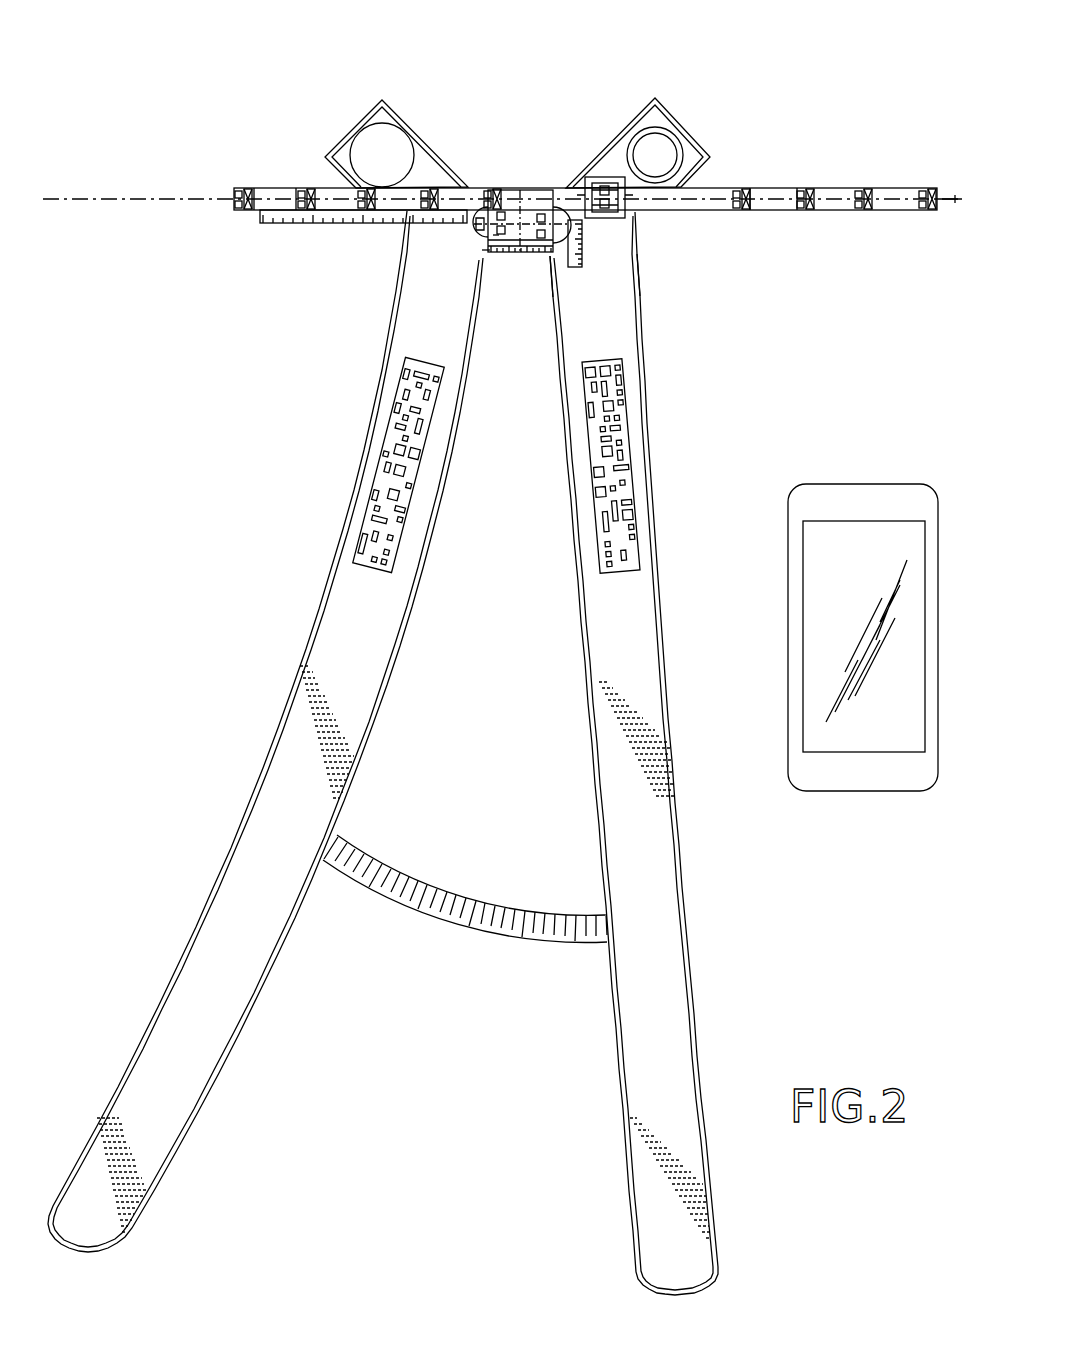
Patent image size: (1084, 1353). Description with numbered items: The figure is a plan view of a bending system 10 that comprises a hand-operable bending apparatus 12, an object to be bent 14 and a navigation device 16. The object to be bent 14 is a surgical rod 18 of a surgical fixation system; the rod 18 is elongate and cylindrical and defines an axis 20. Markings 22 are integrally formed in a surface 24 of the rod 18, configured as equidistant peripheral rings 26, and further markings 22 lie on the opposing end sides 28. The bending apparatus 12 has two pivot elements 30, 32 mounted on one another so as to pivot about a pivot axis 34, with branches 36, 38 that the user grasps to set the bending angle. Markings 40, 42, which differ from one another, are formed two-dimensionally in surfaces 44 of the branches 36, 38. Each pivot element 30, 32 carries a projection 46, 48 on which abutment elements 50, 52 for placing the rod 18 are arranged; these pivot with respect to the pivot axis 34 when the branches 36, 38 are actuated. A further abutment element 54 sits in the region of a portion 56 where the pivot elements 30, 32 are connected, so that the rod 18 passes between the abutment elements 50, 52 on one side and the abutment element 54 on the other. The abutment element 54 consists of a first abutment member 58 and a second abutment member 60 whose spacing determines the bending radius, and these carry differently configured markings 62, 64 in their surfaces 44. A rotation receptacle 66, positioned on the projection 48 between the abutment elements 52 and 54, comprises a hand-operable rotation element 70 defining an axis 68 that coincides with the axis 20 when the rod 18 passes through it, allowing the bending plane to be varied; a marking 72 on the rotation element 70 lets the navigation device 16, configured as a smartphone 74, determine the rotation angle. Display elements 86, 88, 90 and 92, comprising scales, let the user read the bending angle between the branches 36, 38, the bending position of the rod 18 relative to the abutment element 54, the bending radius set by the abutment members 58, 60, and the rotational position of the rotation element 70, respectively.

The bending system 10 is at (783, 97).
The bending apparatus 12 is at (412, 98).
The object to be bent 14 is at (282, 182).
The navigation device 16 is at (863, 621).
The surgical rod 18 is at (274, 213).
The axis 20 is at (88, 197).
The markings 22 is at (243, 193).
The surface 24 is at (757, 207).
The peripheral rings 26 is at (240, 212).
The end sides 28 is at (235, 192).
The pivot element 30 is at (265, 731).
The pivot element 32 is at (661, 753).
The pivot axis 34 is at (518, 212).
The branch 36 is at (295, 742).
The branch 38 is at (643, 863).
The marking 40 is at (395, 425).
The marking 42 is at (622, 468).
The surfaces 44 is at (362, 603).
The projection 46 is at (430, 170).
The projection 48 is at (690, 135).
The abutment element 50 is at (372, 150).
The abutment element 52 is at (658, 140).
The further abutment element 54 is at (474, 258).
The portion 56 is at (540, 254).
The first abutment member 58 is at (490, 242).
The second abutment member 60 is at (590, 245).
The marking 62 is at (487, 228).
The marking 64 is at (582, 250).
The rotation receptacle 66 is at (607, 182).
The axis 68 is at (955, 205).
The rotation element 70 is at (625, 205).
The marking 72 is at (600, 195).
The smartphone 74 is at (889, 783).
The display element 86 is at (456, 928).
The display element 88 is at (318, 224).
The display element 90 is at (497, 258).
The display element 92 is at (628, 262).